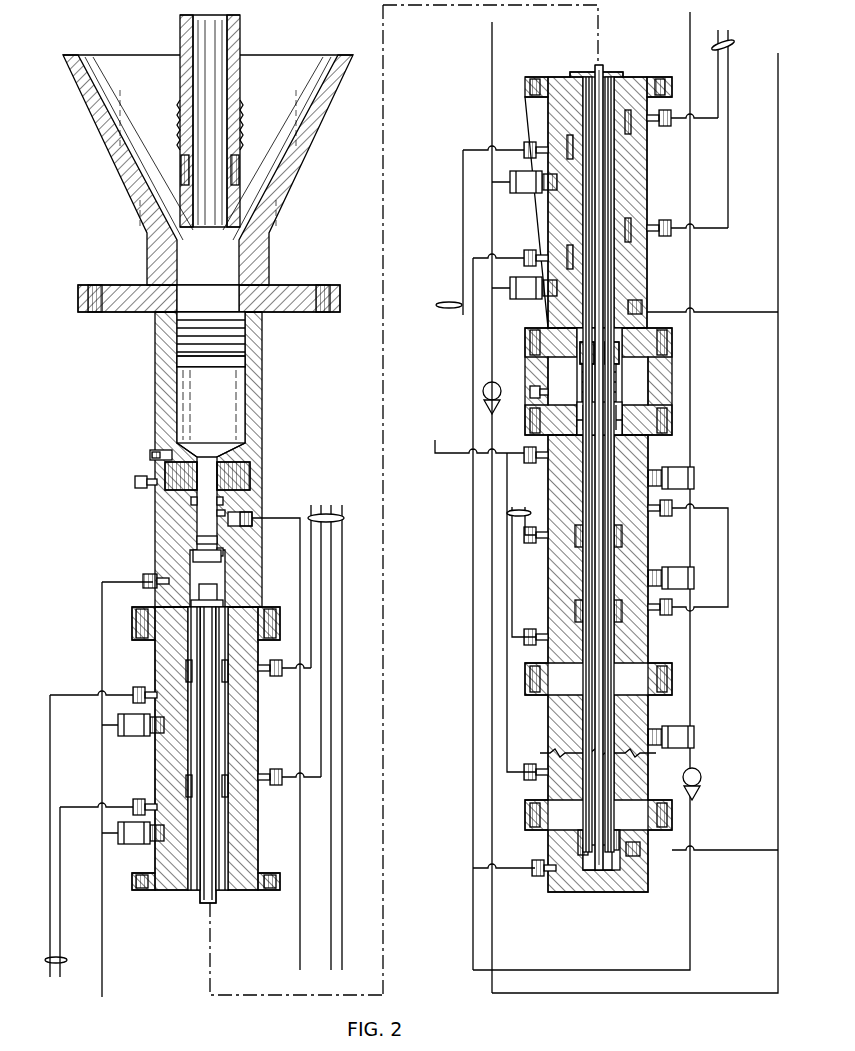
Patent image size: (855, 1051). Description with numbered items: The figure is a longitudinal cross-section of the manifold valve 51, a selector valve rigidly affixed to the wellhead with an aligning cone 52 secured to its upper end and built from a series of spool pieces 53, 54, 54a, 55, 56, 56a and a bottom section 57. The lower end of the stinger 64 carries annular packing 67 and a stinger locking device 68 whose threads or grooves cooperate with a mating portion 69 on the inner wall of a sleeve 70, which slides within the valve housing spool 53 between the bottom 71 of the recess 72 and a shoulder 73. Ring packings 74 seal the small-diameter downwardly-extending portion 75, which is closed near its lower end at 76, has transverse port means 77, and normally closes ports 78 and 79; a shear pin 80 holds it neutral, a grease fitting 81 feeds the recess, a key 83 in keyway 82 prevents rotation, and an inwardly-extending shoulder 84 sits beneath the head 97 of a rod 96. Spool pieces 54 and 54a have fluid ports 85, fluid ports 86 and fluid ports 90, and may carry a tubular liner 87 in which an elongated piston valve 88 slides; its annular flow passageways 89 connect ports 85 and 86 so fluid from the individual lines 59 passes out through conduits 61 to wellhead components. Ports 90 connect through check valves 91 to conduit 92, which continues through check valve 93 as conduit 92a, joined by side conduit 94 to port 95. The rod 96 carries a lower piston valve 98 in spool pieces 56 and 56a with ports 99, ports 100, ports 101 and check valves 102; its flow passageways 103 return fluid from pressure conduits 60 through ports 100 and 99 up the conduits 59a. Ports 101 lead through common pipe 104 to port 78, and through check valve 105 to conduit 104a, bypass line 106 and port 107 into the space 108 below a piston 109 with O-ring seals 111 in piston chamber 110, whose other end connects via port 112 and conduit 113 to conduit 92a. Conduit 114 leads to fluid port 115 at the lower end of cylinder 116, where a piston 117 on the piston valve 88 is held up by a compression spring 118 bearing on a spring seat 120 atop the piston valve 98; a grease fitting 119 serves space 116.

The manifold valve 51 is at (273, 457).
The aligning cone 52 is at (270, 218).
The valve housing spool 53 is at (262, 410).
The spool piece 54 is at (256, 822).
The spool piece 54a is at (648, 192).
The spool piece 55 is at (556, 370).
The spool piece 56 is at (556, 472).
The spool piece 56a is at (648, 762).
The section 57 is at (649, 876).
The individual lines 59 is at (344, 518).
The conduits 59a is at (534, 490).
The pressure conduits 60 is at (722, 620).
The pressure lines 61 is at (436, 306).
The stinger 64 is at (240, 42).
The annular packing 67 is at (240, 172).
The stinger locking device 68 is at (241, 110).
The mating portion 69 is at (245, 336).
The sleeve 70 is at (244, 392).
The bottom 71 is at (172, 492).
The recess 72 is at (156, 458).
The shoulder 73 is at (208, 297).
The ring packings 74 is at (224, 502).
The downwardly-extending portion 75 is at (226, 514).
The closed lower end 76 is at (196, 562).
The transverse port means 77 is at (198, 545).
The port 78 is at (250, 527).
The port 79 is at (146, 582).
The shear pin 80 is at (188, 446).
The grease fitting 81 is at (135, 482).
The keyway 82 is at (245, 362).
The key 83 is at (262, 295).
The inwardly-extending shoulder 84 is at (195, 605).
The fluid ports 85 is at (262, 672).
The fluid ports 86 is at (146, 690).
The tubular liner 87 is at (222, 685).
The piston valve 88 is at (226, 708).
The annular flow passageways 89 is at (188, 666).
The fluid ports 90 is at (157, 740).
The check valves 91 is at (135, 737).
The conduit 92 is at (102, 645).
The conduit 92a is at (778, 70).
The check valve 93 is at (483, 393).
The side conduit 94 is at (705, 312).
The port 95 is at (642, 316).
The rod 96 is at (217, 650).
The head 97 is at (218, 596).
The piston valve 98 is at (595, 582).
The ports 99 is at (552, 540).
The ports 100 is at (662, 516).
The ports 101 is at (650, 468).
The check valves 102 is at (680, 465).
The flow passageways 103 is at (575, 545).
The common pipe 104 is at (300, 965).
The conduit 104a is at (695, 822).
The check valve 105 is at (700, 782).
The bypass line 106 is at (508, 868).
The port 107 is at (552, 872).
The space 108 is at (590, 892).
The piston 109 is at (578, 847).
The piston chamber 110 is at (620, 840).
The O-ring seals 111 is at (620, 892).
The port 112 is at (640, 852).
The conduit 113 is at (720, 856).
The conduit 114 is at (511, 430).
The fluid port 115 is at (548, 453).
The cylinder 116 is at (580, 400).
The piston 117 is at (622, 342).
The compression spring 118 is at (620, 378).
The grease fitting 119 is at (536, 392).
The spring seat 120 is at (636, 405).